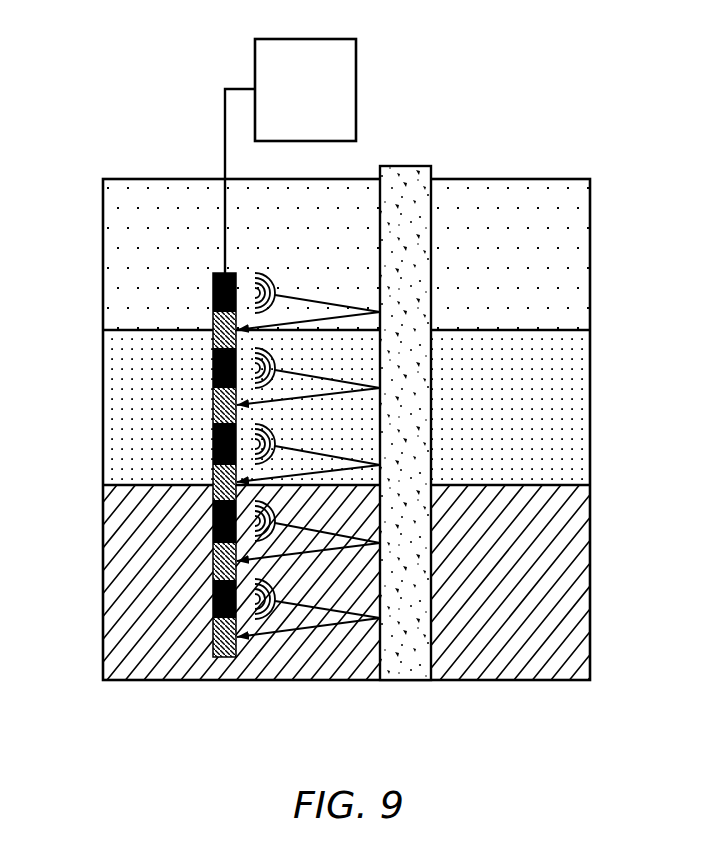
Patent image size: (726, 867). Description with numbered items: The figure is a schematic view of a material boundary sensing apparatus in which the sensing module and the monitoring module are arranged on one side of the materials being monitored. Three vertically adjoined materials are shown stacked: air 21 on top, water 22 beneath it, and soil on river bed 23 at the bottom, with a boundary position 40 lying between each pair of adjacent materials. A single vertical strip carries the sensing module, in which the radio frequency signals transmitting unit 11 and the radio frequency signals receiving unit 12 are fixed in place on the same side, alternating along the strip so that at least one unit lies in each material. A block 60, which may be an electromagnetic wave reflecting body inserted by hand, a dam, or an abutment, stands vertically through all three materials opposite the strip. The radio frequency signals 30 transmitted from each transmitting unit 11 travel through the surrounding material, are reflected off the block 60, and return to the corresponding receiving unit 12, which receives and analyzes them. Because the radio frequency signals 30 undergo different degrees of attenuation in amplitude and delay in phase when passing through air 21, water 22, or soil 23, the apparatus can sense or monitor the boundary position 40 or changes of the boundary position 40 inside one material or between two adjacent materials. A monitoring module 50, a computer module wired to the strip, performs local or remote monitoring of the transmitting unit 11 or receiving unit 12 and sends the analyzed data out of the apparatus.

The radio frequency signals transmitting unit 11 is at (213, 442).
The radio frequency signals receiving unit 12 is at (213, 490).
The material (air) 21 is at (562, 206).
The material (water) 22 is at (565, 393).
The material (soil on river bed) 23 is at (562, 618).
The radio frequency signals 30 is at (275, 606).
The boundary position 40 is at (552, 330).
The monitoring module 50 is at (320, 105).
The block 60 is at (415, 173).